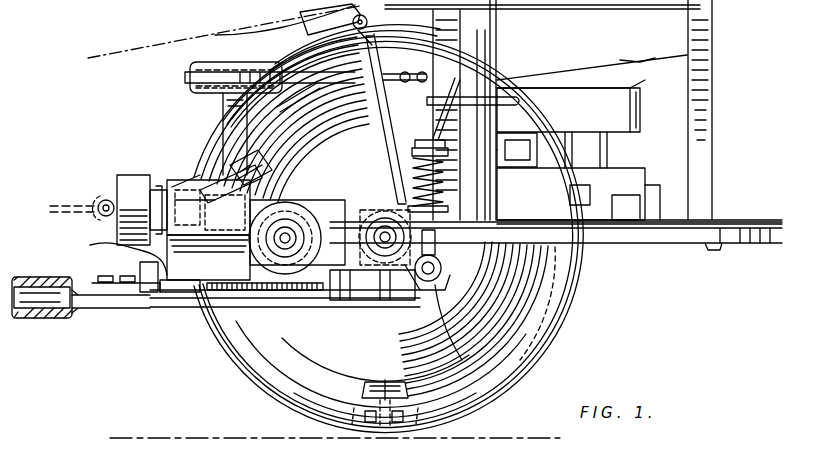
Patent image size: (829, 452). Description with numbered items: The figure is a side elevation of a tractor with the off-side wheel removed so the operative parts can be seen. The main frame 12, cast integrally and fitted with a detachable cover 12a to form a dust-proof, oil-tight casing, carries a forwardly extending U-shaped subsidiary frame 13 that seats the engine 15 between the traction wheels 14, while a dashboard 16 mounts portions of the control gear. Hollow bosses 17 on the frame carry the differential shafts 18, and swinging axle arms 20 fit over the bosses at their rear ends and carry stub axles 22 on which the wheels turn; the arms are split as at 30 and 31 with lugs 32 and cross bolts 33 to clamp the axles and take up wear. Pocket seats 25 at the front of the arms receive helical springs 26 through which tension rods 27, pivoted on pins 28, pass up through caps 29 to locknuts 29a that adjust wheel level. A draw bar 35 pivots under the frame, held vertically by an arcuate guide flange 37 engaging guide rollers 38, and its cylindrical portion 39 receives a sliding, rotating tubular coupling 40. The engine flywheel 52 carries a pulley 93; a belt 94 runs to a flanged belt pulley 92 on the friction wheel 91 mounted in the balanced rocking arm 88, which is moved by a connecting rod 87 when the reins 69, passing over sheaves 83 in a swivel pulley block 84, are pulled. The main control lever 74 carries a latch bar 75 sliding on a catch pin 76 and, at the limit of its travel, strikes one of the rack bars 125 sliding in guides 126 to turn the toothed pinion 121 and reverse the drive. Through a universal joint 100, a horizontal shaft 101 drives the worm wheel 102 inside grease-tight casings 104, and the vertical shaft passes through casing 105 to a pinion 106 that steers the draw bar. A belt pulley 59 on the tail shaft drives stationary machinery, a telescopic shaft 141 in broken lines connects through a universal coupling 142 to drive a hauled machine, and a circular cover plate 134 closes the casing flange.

The main frame 12 is at (180, 294).
The detachable cover 12a is at (232, 165).
The subsidiary frame 13 is at (648, 243).
The traction wheels 14 is at (570, 297).
The engine 15 is at (568, 110).
The dashboard 16 is at (500, 60).
The hollow bosses 17 is at (300, 275).
The differential shafts 18 is at (287, 260).
The swinging axle arms 20 is at (375, 255).
The stub axles 22 is at (418, 278).
The pocket seats 25 is at (548, 215).
The helical springs 26 is at (505, 198).
The tension rods 27 is at (470, 270).
The pins 28 is at (448, 360).
The caps 29 is at (460, 140).
The locknuts 29a is at (540, 70).
The split 30 is at (215, 292).
The split 31 is at (412, 292).
The lugs 32 is at (235, 295).
The cross bolts 33 is at (245, 300).
The draw bar 35 is at (115, 310).
The arcuate guide flange 37 is at (135, 250).
The guide rollers 38 is at (140, 278).
The cylindrical portion 39 is at (30, 305).
The tubular coupling 40 is at (36, 277).
The flywheel 52 is at (455, 275).
The belt pulley 59 is at (142, 210).
The reins 69 is at (150, 50).
The main control lever 74 is at (317, 102).
The latch bar 75 is at (520, 72).
The catch pin 76 is at (490, 120).
The sheaves 83 is at (320, 23).
The swivel pulley block 84 is at (396, 107).
The connecting rod 87 is at (412, 128).
The balanced rocking arm 88 is at (622, 112).
The friction wheel 91 is at (465, 45).
The flanged belt pulley 92 is at (496, 75).
The pulley 93 is at (545, 165).
The belt 94 is at (560, 128).
The universal joint 100 is at (270, 52).
The horizontal shaft 101 is at (215, 35).
The worm wheel 102 is at (190, 92).
The grease-tight casings 104 is at (236, 62).
The casing 105 is at (223, 122).
The pinion 106 is at (225, 282).
The toothed pinion 121 is at (175, 190).
The rack bars 125 is at (222, 190).
The guides 126 is at (300, 112).
The circular cover plate 134 is at (375, 359).
The telescopic shaft 141 is at (70, 206).
The universal coupling 142 is at (100, 202).